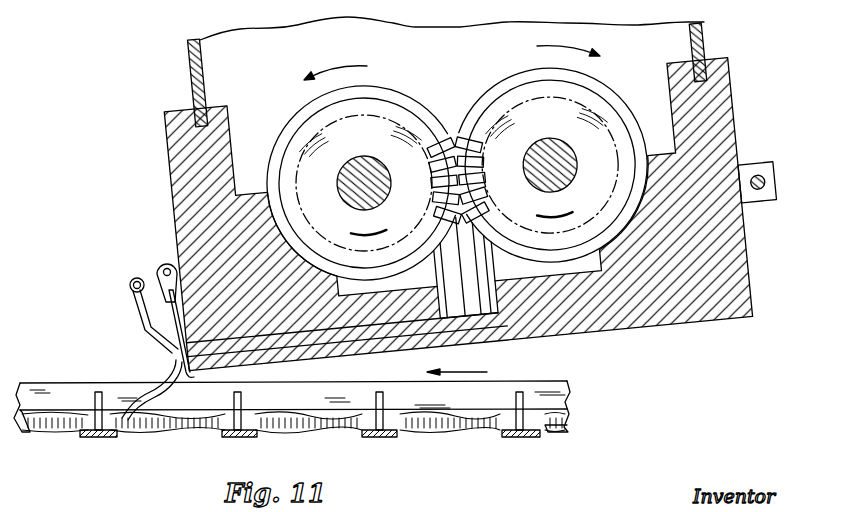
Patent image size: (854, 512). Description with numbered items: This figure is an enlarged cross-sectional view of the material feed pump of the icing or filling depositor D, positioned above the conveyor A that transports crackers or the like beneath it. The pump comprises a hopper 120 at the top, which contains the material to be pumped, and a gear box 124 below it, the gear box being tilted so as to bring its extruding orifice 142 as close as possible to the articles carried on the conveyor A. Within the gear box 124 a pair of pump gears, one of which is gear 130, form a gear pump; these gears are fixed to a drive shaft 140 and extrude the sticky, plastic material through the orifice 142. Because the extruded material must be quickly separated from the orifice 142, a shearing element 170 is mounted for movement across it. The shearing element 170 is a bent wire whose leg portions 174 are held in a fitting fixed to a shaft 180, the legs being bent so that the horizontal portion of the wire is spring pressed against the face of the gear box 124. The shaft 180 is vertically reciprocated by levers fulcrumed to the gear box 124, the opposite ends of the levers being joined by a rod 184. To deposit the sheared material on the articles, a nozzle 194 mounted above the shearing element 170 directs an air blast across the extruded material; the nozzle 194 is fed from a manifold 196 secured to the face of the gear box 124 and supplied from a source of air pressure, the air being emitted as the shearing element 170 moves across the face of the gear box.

The icing or filling depositor D is at (163, 203).
The hopper 120 is at (188, 56).
The gear box 124 is at (178, 165).
The gear 130 is at (402, 128).
The drive shaft 140 is at (548, 158).
The rod 184 is at (772, 175).
The shearing element 170 is at (158, 267).
The shaft 180 is at (166, 261).
The leg portions 174 is at (172, 323).
The manifold 196 is at (130, 284).
The nozzle 194 is at (136, 302).
The orifice 142 is at (180, 352).
The conveyor A is at (222, 437).